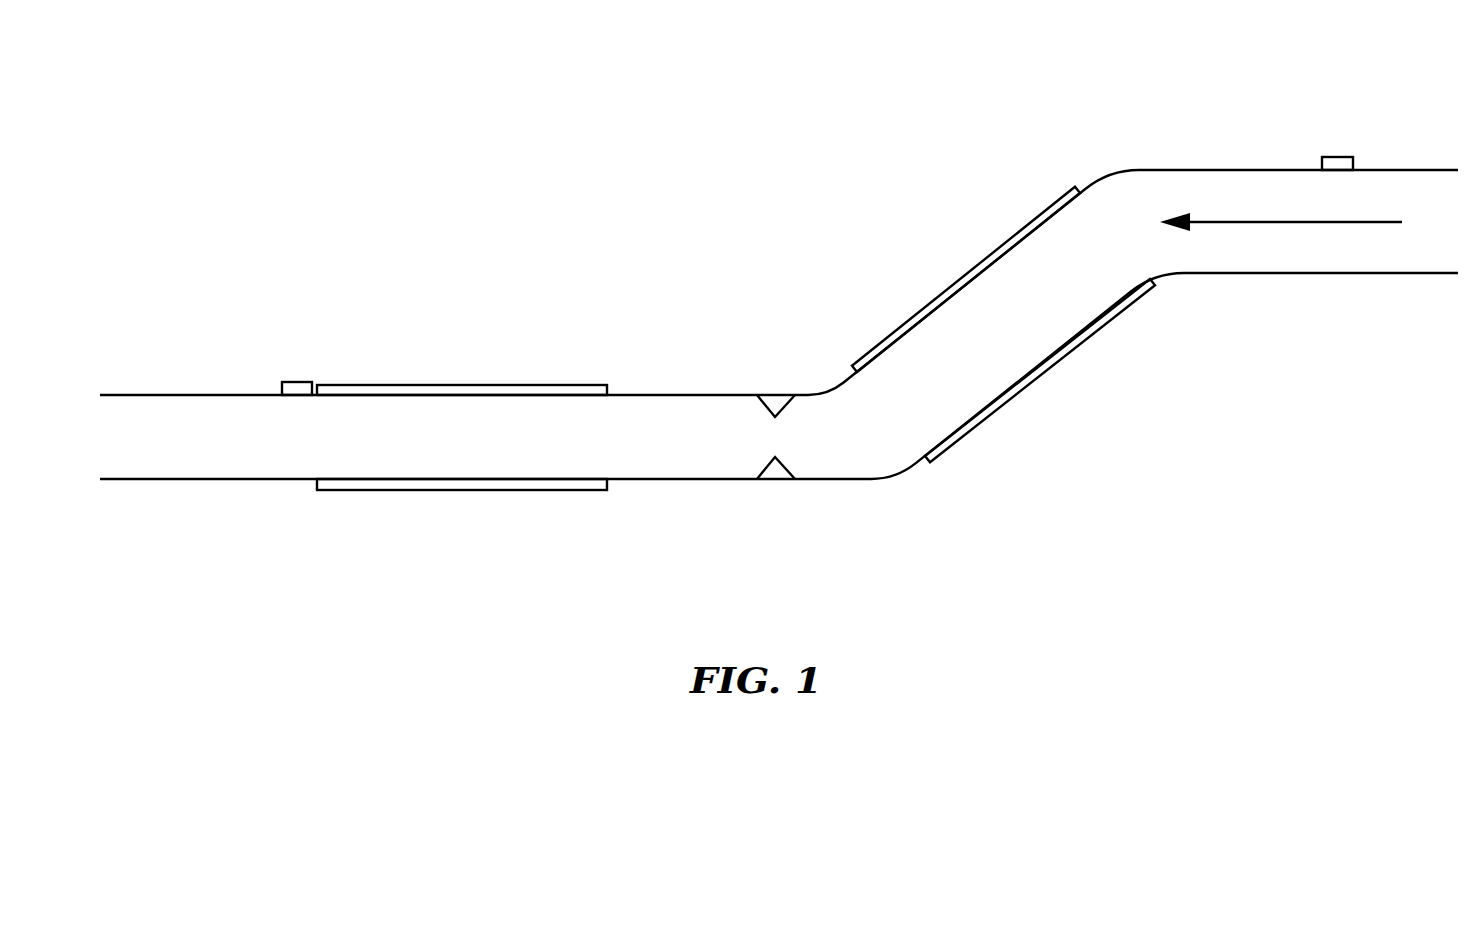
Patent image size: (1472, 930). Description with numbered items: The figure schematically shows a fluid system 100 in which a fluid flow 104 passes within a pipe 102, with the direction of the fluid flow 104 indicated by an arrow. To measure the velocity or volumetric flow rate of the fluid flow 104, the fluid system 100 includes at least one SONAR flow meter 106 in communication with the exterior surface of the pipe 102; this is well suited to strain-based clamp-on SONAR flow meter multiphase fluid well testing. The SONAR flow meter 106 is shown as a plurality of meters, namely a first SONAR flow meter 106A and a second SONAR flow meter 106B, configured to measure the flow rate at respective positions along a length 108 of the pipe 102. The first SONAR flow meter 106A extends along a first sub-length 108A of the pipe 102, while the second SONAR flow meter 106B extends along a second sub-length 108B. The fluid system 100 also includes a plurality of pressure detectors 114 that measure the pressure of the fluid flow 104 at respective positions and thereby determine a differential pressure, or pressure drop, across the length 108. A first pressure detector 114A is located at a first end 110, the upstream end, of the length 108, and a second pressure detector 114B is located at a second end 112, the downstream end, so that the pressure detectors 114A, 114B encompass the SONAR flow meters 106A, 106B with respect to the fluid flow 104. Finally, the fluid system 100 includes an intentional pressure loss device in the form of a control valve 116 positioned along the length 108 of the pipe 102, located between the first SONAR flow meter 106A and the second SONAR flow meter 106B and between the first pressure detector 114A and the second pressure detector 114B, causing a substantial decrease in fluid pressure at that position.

The fluid system 100 is at (620, 128).
The pipe 102 is at (1315, 273).
The fluid flow 104 is at (1215, 222).
The SONAR flow meter 106 is at (698, 282).
The first SONAR flow meter 106A is at (990, 256).
The second SONAR flow meter 106B is at (478, 385).
The length of the pipe 108 is at (915, 530).
The first sub-length 108A is at (1069, 379).
The second sub-length 108B is at (456, 509).
The first end 110 is at (1366, 143).
The second end 112 is at (268, 365).
The pressure detectors 114 is at (811, 222).
The first pressure detector 114A is at (1335, 157).
The second pressure detector 114B is at (298, 382).
The control valve 116 is at (773, 396).